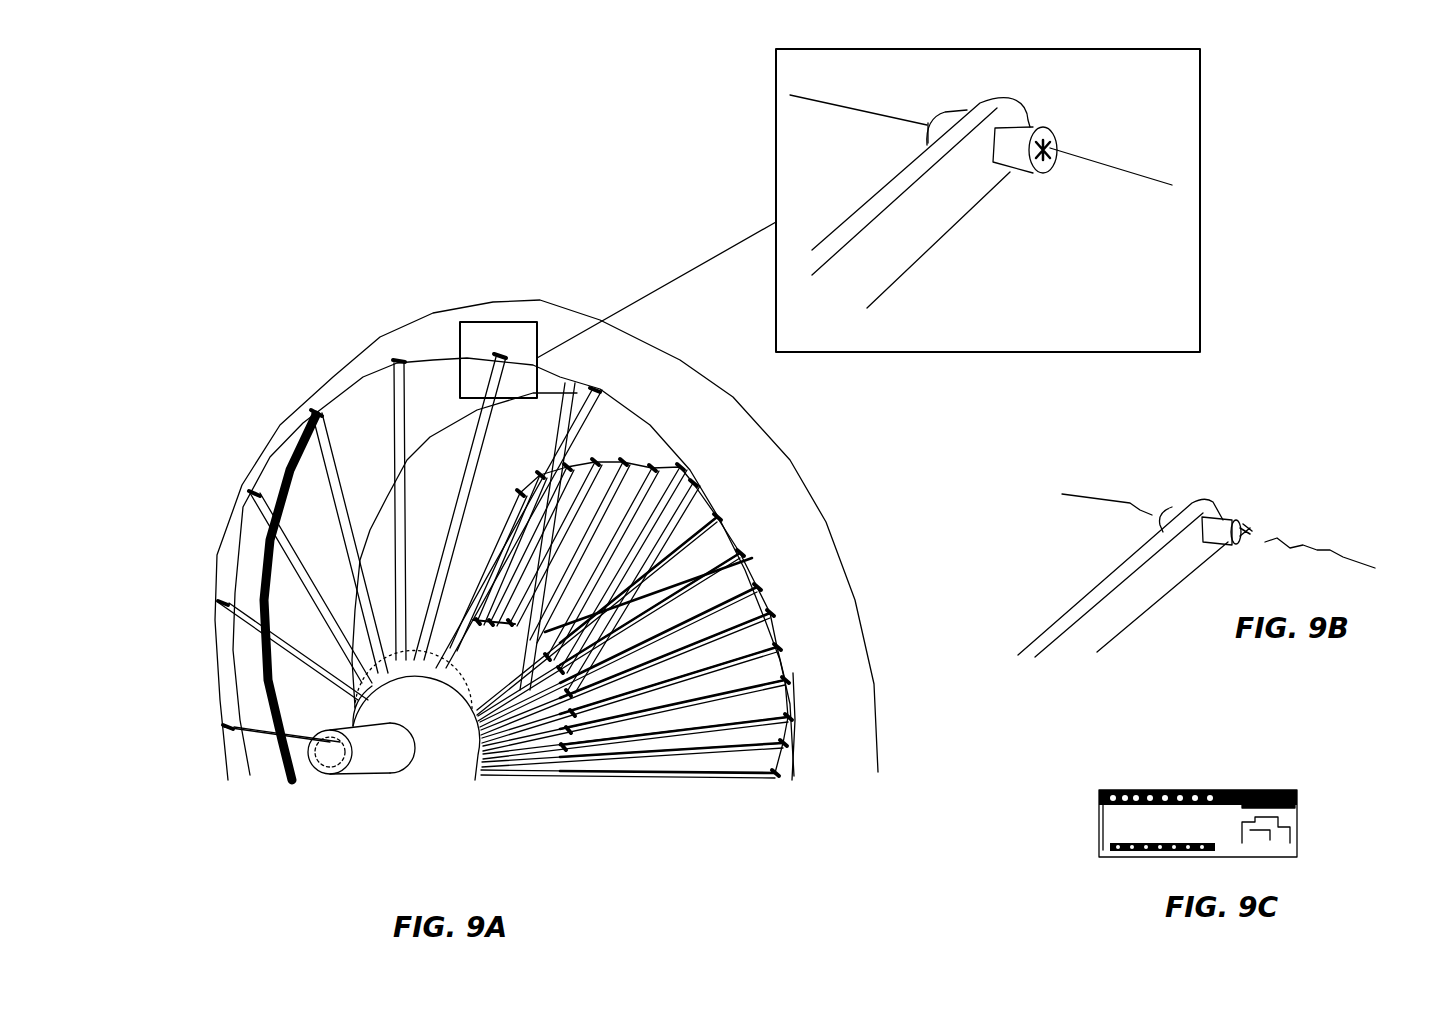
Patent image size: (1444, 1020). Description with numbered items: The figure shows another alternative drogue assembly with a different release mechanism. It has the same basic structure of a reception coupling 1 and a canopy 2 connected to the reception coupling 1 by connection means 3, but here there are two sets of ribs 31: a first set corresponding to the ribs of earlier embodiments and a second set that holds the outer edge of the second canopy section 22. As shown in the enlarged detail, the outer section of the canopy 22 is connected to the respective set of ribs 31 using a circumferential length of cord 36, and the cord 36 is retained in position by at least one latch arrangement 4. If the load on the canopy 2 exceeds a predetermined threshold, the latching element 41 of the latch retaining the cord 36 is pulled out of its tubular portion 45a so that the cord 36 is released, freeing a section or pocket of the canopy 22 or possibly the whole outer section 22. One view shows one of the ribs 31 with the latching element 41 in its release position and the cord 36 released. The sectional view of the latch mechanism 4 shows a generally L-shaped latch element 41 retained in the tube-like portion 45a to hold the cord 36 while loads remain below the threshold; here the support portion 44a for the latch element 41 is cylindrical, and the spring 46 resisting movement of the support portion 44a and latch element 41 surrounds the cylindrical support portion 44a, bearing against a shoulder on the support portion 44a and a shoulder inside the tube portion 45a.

In FIG. 9A, the reception coupling 1 is at (443, 763).
In FIG. 9A, the canopy 2 is at (430, 338).
In FIG. 9A, the connection means 3 is at (300, 527).
In FIG. 9A, the second canopy section 22 is at (705, 411).
In FIG. 9A, the ribs 31 is at (322, 462).
In FIG. 9B, the ribs 31 is at (1115, 598).
In FIG. 9A, the latch arrangement 4 is at (1027, 135).
In FIG. 9A, the cord 36 is at (1137, 167).
In FIG. 9B, the cord 36 is at (1338, 552).
In FIG. 9B, the latching element 41 is at (1252, 530).
In FIG. 9C, the latching element 41 is at (1285, 825).
In FIG. 9C, the support portion 44a is at (1205, 817).
In FIG. 9C, the tubular portion 45a is at (1273, 793).
In FIG. 9C, the spring 46 is at (1132, 792).